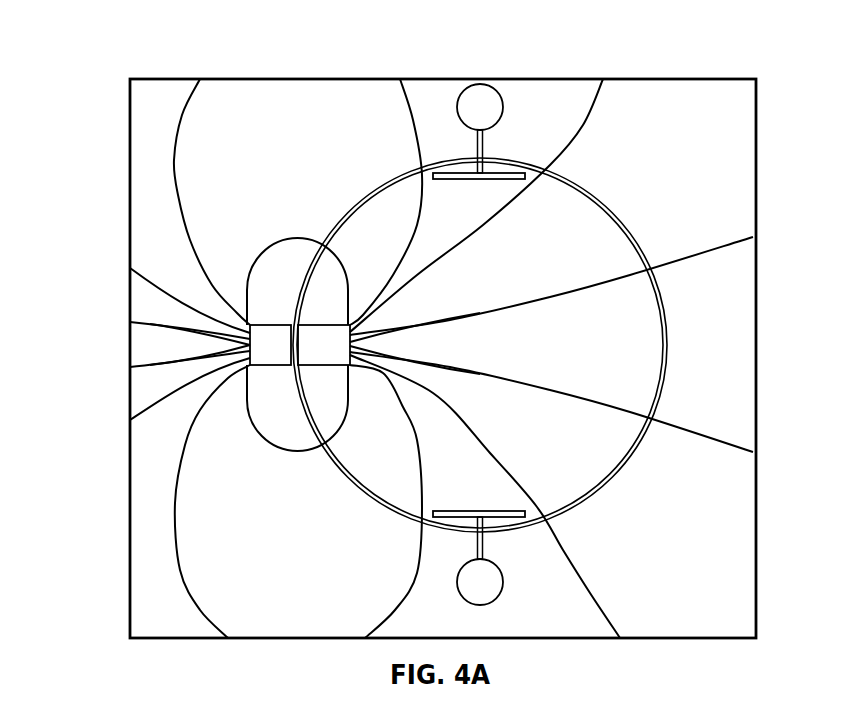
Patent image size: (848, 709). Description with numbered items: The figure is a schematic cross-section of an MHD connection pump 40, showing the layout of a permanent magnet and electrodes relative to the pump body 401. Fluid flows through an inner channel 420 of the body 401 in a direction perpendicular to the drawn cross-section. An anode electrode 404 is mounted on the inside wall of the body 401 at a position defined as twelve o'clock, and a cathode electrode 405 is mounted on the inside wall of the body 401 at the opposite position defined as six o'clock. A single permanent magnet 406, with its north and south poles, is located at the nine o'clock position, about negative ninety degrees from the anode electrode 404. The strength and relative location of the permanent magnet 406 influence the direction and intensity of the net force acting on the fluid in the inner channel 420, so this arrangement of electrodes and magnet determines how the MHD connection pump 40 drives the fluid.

The MHD connection pump 40 is at (116, 77).
The body 401 is at (613, 213).
The anode electrode 404 is at (512, 170).
The cathode electrode 405 is at (463, 512).
The permanent magnet 406 is at (263, 330).
The inner channel 420 is at (605, 353).